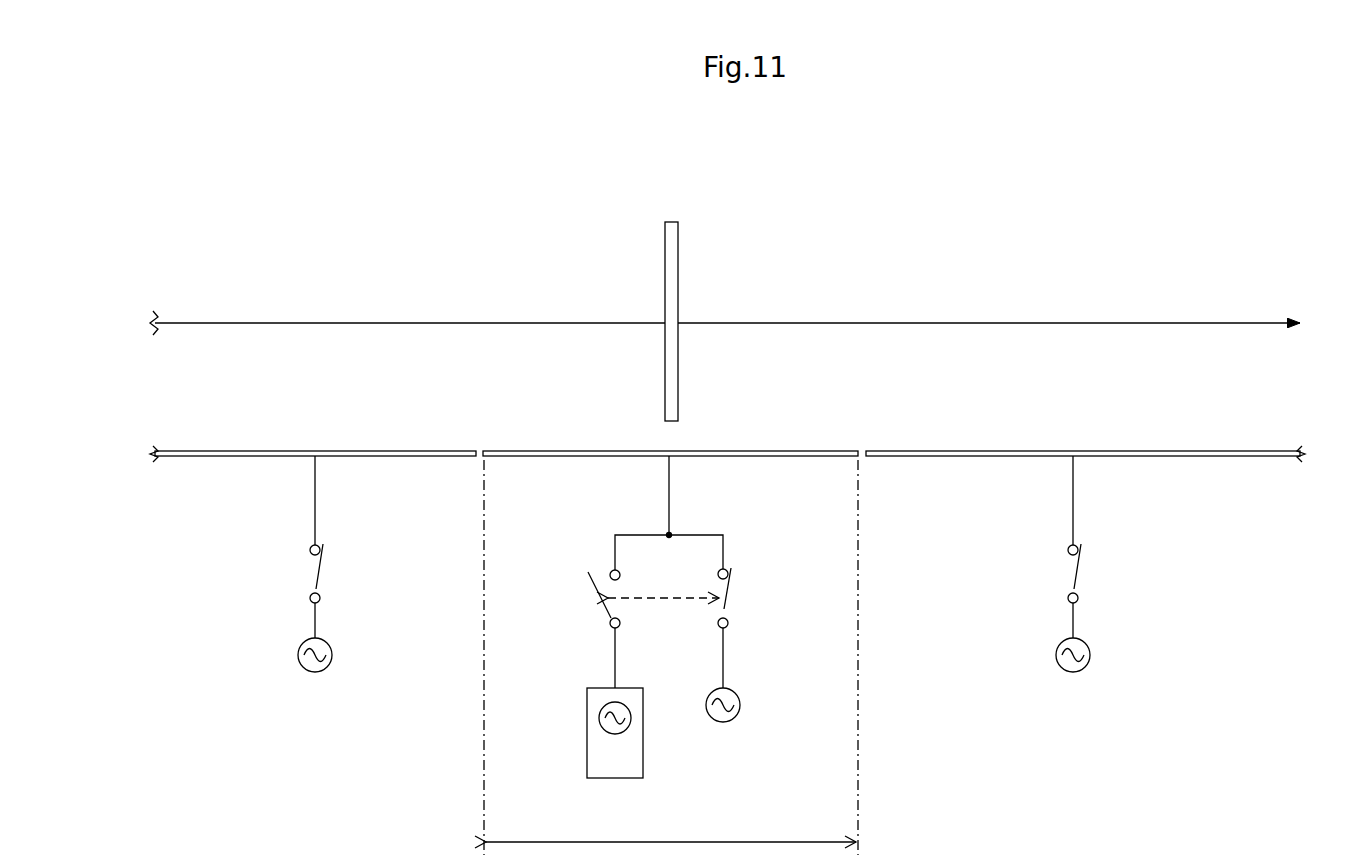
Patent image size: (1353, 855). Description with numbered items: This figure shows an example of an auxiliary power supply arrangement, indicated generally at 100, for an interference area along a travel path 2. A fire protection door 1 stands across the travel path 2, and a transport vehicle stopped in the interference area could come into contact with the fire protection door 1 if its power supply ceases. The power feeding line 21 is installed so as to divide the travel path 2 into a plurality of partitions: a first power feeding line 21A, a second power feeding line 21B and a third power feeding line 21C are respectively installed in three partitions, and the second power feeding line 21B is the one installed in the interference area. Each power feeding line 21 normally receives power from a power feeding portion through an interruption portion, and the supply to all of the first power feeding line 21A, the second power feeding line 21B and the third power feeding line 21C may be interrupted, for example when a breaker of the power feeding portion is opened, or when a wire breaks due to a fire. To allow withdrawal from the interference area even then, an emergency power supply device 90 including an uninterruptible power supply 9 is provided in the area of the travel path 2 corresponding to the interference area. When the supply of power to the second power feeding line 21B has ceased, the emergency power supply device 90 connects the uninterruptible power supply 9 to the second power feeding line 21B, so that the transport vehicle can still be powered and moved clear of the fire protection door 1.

The power supply system 100 is at (1149, 198).
The fire protection door 1 is at (664, 262).
The travel path 2 is at (1192, 322).
The power feeding line 21 is at (727, 412).
The first power feeding line 21A is at (265, 450).
The second power feeding line 21B is at (730, 450).
The third power feeding line 21C is at (950, 450).
The uninterruptible power supply 9 is at (587, 719).
The emergency power supply device 90 is at (544, 557).